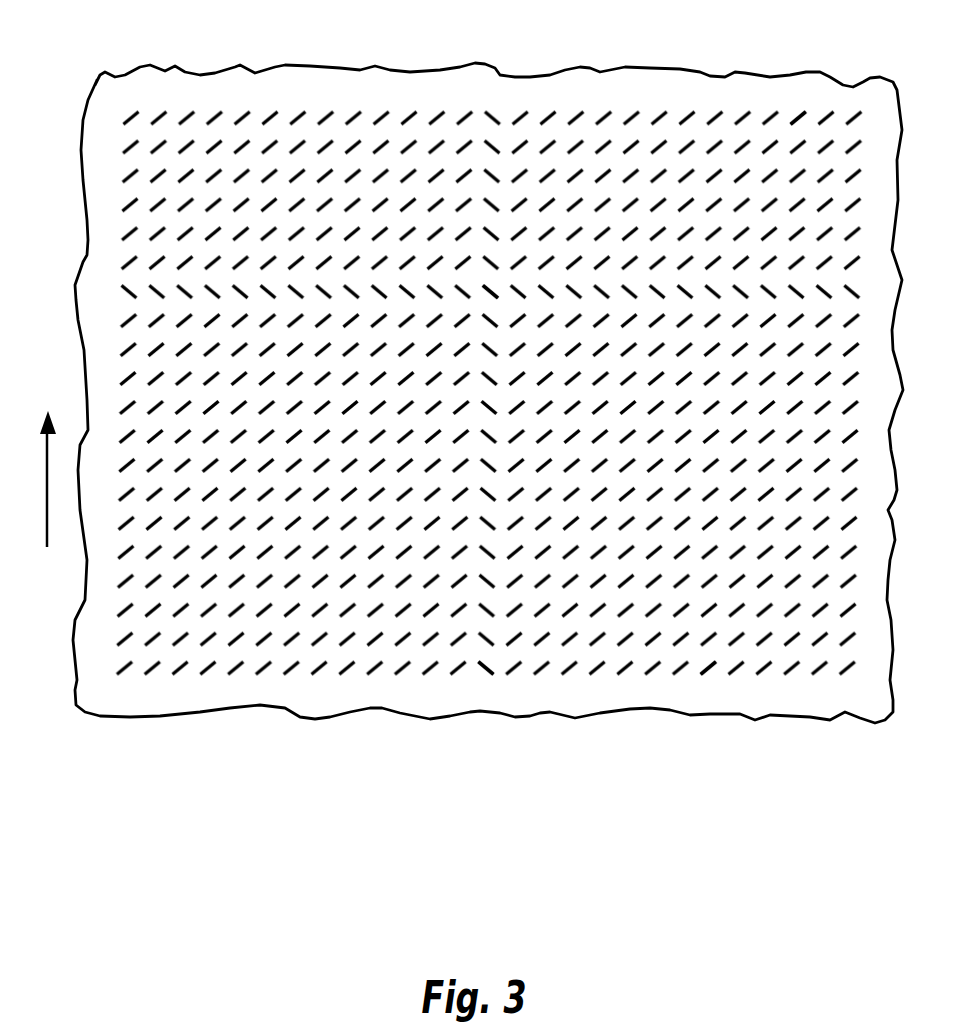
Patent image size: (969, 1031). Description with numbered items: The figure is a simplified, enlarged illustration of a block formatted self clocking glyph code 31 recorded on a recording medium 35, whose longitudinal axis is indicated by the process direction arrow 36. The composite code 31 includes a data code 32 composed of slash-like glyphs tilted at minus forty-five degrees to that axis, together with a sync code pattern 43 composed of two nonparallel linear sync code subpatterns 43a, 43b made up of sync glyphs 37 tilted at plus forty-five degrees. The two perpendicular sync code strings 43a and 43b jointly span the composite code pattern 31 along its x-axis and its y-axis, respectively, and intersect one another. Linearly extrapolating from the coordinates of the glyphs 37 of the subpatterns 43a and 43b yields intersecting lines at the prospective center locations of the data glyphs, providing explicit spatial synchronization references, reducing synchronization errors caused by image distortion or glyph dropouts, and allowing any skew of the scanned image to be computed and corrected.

The self clocking glyph code 31 is at (606, 85).
The data code 32 is at (800, 121).
The recording medium 35 is at (702, 696).
The process direction arrow 36 is at (47, 455).
The sync code glyphs 37 is at (482, 672).
The sync code pattern 43 is at (478, 272).
The sync code subpattern 43a is at (494, 100).
The sync code subpattern 43b is at (112, 292).